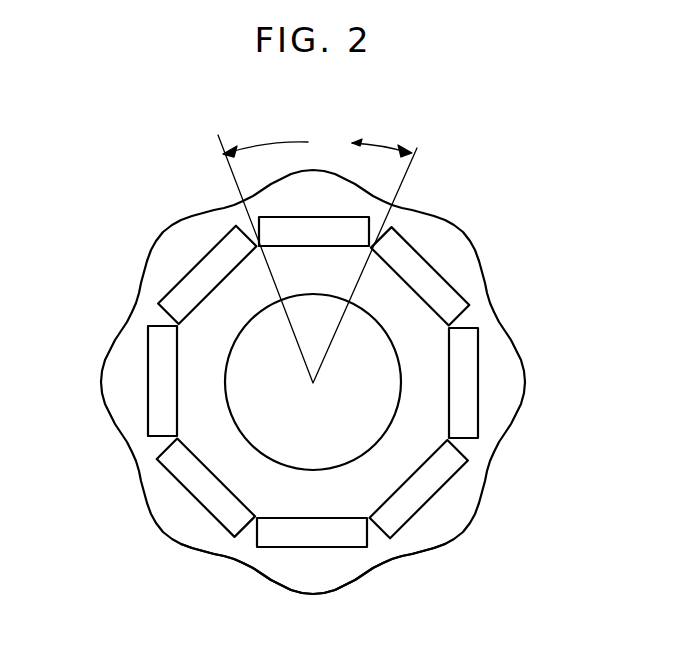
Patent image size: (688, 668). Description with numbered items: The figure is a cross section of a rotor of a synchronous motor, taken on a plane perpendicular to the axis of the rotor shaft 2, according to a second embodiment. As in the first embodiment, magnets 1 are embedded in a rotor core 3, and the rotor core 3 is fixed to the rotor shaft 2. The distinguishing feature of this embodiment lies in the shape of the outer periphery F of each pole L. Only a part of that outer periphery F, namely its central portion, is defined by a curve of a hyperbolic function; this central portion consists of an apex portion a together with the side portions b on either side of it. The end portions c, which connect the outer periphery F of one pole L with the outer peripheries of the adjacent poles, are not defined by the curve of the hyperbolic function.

The magnets 1 is at (420, 267).
The rotor shaft 2 is at (287, 405).
The rotor core 3 is at (500, 330).
The outer periphery F is at (482, 515).
The pole L is at (317, 255).
The apex portion a is at (313, 595).
The side portions b is at (367, 615).
The end portions c is at (392, 588).